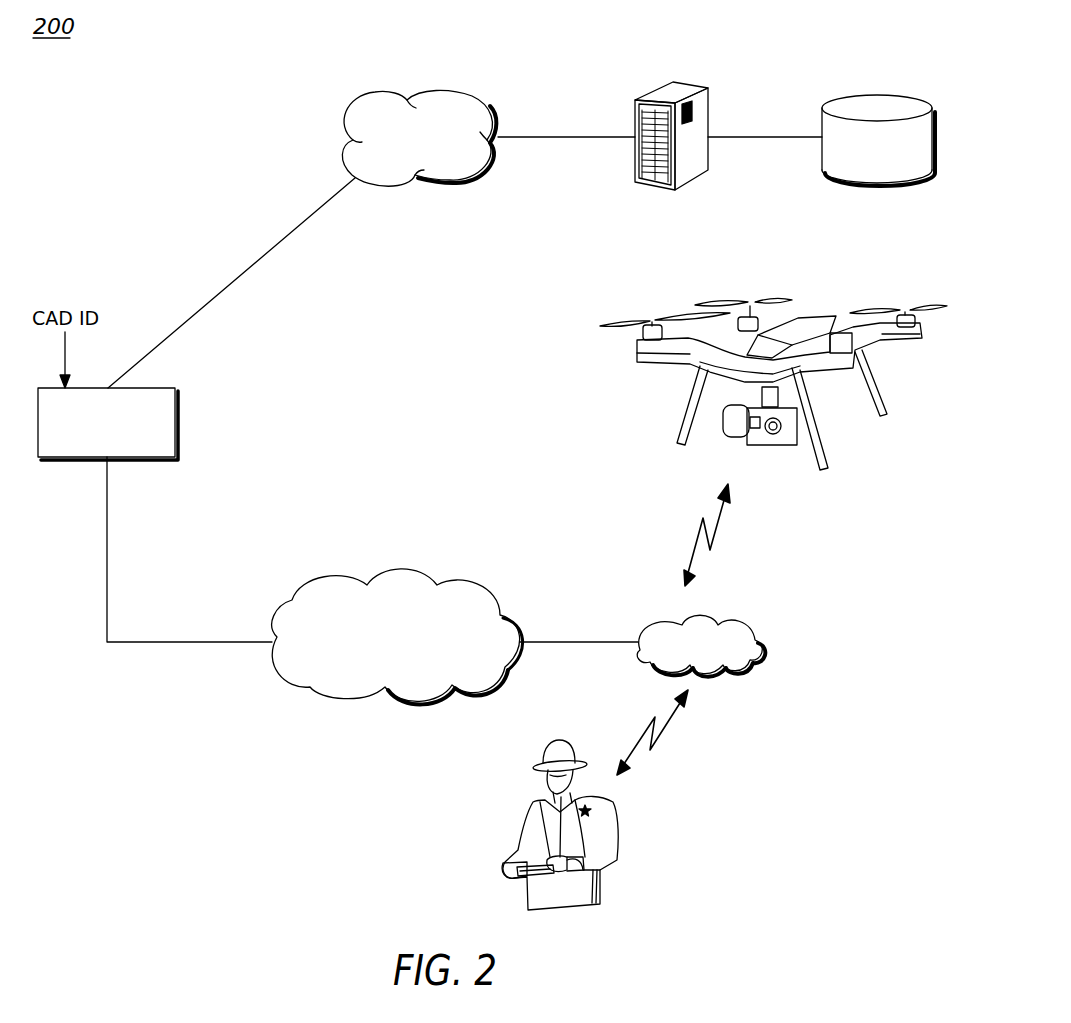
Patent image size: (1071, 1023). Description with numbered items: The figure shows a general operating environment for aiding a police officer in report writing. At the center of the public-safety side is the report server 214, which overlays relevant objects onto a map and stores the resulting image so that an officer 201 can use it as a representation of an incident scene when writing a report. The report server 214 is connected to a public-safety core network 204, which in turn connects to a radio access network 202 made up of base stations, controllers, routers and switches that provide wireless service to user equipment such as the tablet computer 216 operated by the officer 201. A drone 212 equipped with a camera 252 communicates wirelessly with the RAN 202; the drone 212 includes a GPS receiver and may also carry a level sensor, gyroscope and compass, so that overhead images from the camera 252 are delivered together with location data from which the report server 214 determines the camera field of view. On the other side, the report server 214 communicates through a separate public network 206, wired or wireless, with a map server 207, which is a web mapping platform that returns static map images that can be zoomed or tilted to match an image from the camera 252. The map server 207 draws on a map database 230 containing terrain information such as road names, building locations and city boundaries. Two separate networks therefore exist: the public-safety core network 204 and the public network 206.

The officer 201 is at (618, 831).
The radio access network 202 is at (762, 648).
The public-safety core network 204 is at (402, 573).
The network 206 is at (378, 92).
The map server 207 is at (672, 80).
The drone 212 is at (650, 322).
The report server 214 is at (178, 426).
The tablet computer 216 is at (525, 882).
The map database 230 is at (878, 95).
The camera 252 is at (758, 446).